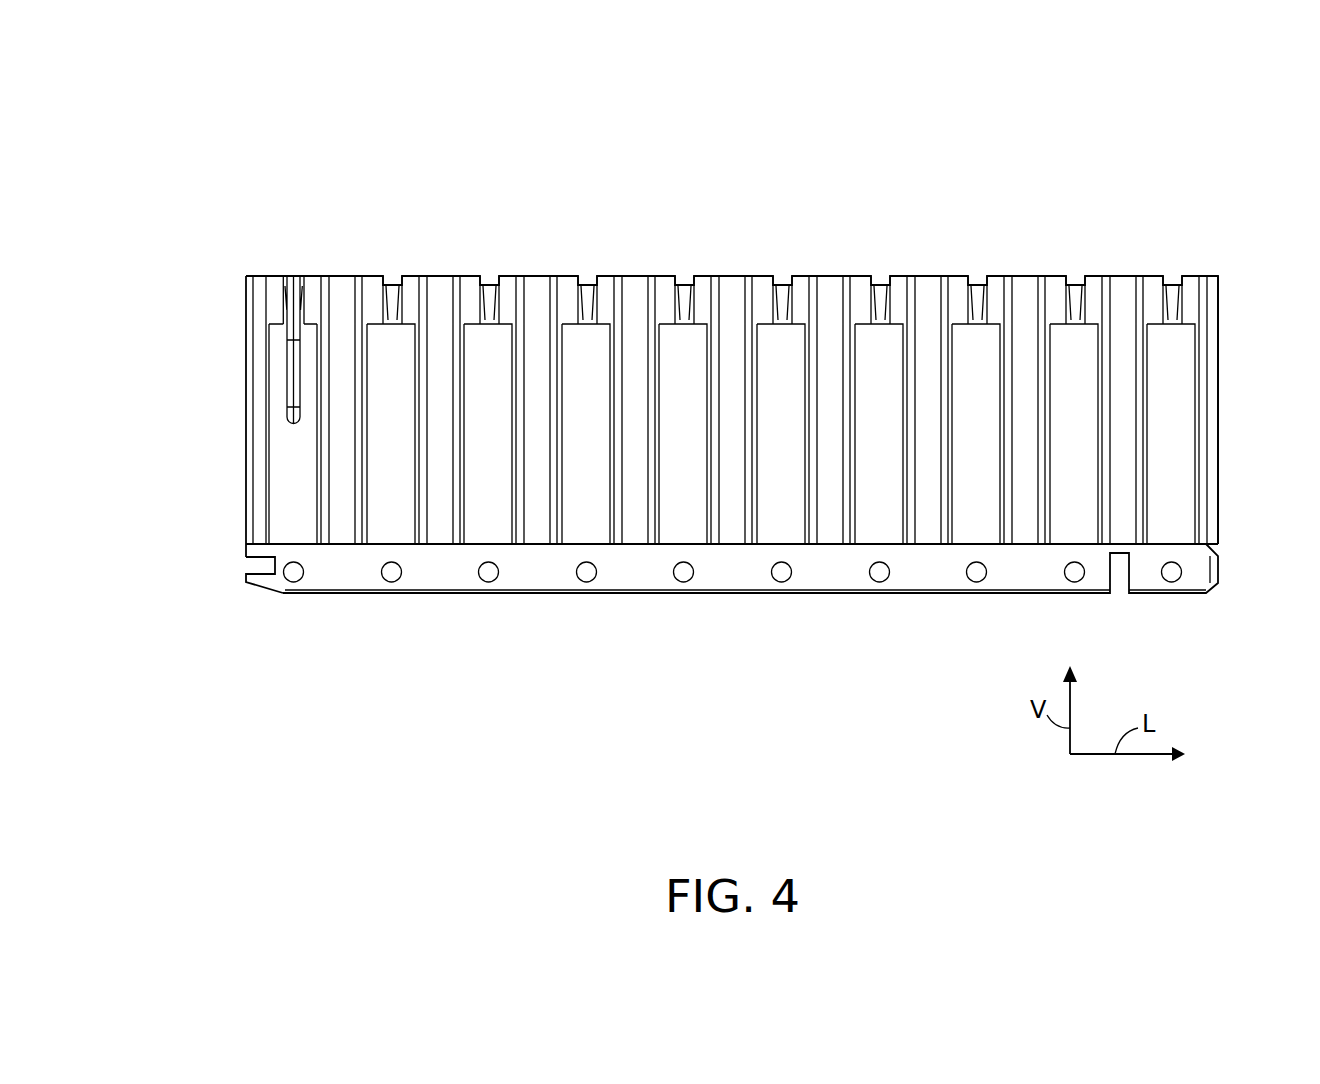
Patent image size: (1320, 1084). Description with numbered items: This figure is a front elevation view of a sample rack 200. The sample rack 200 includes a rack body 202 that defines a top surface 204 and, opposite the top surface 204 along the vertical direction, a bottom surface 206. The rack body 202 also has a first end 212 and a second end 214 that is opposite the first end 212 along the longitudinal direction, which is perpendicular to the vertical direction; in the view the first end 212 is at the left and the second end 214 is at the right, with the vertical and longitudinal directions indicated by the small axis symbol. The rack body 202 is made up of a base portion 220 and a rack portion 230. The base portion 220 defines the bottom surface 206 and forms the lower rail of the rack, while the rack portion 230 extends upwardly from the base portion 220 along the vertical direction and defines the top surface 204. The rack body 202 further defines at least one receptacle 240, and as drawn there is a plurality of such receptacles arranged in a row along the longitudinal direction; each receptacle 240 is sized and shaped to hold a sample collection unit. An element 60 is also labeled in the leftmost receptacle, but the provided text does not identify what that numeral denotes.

The sample rack 200 is at (189, 135).
The terminal pin 60 is at (290, 272).
The top surface 204 is at (340, 275).
The rack body 202 is at (246, 305).
The rack portion 230 is at (219, 377).
The first end 212 is at (237, 430).
The receptacle 240 is at (285, 483).
The base portion 220 is at (234, 575).
The bottom surface 206 is at (343, 594).
The second end 214 is at (1222, 443).